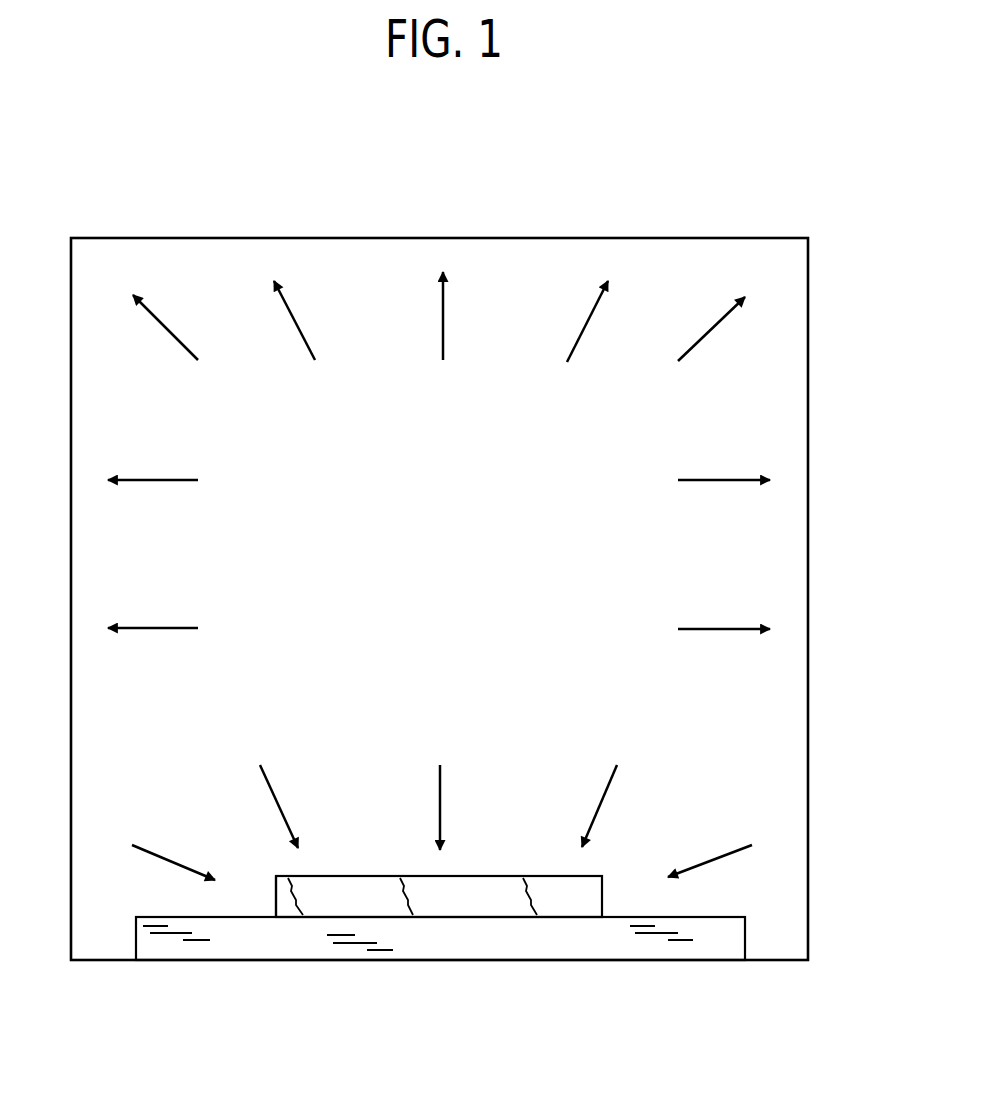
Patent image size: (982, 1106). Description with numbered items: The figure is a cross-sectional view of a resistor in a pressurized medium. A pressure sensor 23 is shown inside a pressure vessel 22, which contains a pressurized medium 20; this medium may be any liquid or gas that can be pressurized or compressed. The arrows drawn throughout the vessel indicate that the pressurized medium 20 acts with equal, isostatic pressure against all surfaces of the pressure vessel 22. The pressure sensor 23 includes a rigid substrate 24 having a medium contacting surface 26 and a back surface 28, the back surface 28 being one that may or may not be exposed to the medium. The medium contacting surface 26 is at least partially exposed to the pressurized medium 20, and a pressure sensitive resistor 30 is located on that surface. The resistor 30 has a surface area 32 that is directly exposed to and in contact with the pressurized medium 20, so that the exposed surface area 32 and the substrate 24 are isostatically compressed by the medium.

The pressurized medium 20 is at (465, 552).
The pressure vessel 22 is at (200, 238).
The pressure sensor 23 is at (725, 912).
The rigid substrate 24 is at (598, 938).
The medium contacting surface 26 is at (242, 917).
The back surface 28 is at (240, 960).
The pressure sensitive resistor 30 is at (340, 895).
The surface area 32 is at (502, 875).